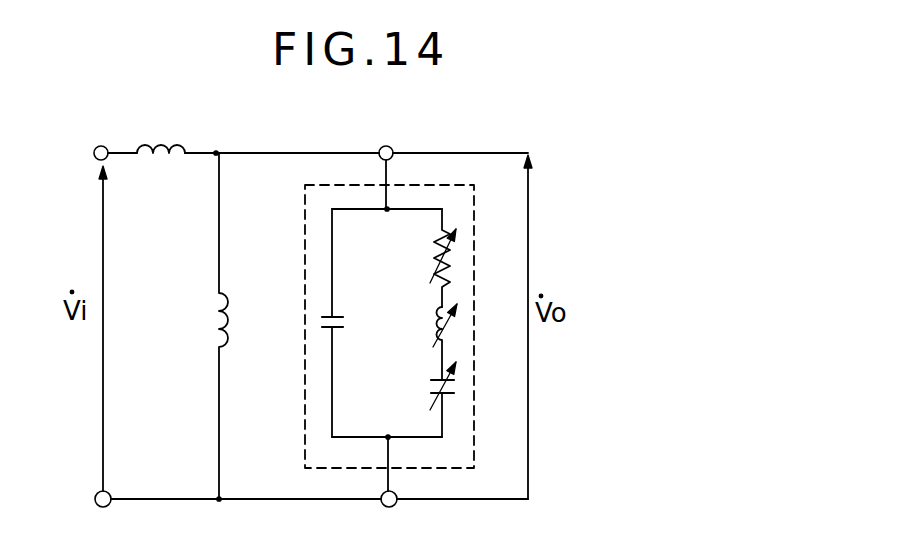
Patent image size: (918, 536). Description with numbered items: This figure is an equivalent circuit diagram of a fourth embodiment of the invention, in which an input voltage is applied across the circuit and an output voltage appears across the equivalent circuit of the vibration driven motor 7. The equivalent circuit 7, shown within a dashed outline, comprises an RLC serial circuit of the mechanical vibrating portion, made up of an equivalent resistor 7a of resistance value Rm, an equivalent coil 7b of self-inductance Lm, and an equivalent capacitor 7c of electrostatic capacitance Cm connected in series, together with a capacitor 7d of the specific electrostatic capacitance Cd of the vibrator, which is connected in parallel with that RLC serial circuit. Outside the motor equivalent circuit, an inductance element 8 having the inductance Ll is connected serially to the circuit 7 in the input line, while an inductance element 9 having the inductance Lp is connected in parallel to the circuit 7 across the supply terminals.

The equivalent circuit of the vibration driven motor 7 is at (443, 185).
The equivalent resistor 7a is at (459, 242).
The equivalent coil 7b is at (455, 325).
The equivalent capacitor 7c is at (460, 390).
The capacitor 7d is at (352, 332).
The inductance element 8 is at (187, 143).
The inductance element 9 is at (232, 306).